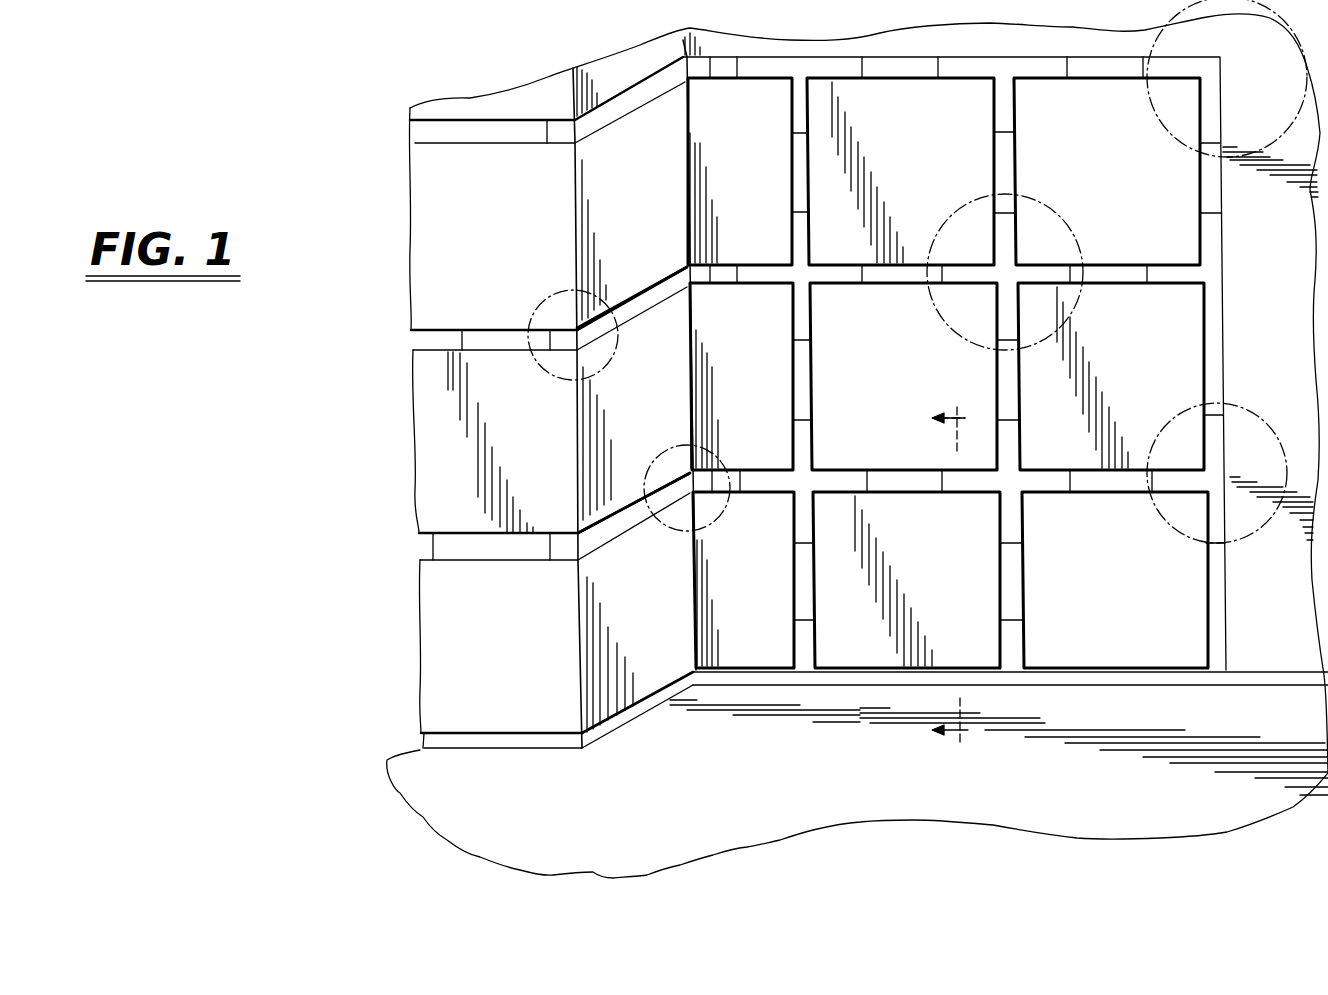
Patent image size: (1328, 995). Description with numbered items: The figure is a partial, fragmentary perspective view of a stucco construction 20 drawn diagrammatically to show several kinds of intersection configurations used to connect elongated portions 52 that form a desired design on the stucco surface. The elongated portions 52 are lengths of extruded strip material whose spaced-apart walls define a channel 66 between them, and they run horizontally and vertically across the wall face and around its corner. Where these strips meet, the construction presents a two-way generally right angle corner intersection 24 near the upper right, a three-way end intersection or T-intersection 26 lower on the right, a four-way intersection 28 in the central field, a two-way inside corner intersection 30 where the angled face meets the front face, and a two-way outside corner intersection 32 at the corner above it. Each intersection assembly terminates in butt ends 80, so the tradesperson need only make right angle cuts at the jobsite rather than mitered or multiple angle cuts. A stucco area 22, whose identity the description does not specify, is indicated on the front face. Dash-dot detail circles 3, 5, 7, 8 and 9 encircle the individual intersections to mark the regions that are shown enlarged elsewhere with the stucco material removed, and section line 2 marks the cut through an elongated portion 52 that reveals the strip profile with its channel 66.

The stucco construction 20 is at (353, 441).
The panel 22 is at (772, 248).
The two-way corner intersection 24 is at (1245, 92).
The T-intersection 26 is at (1243, 510).
The four-way intersection 28 is at (1037, 239).
The inside corner intersection 30 is at (703, 500).
The outside corner intersection 32 is at (593, 351).
The elongated portions 52 is at (490, 351).
The channel 66 is at (481, 131).
The butt ends 80 is at (550, 338).
The section line 2 is at (956, 572).
The detail circle 3 is at (1005, 272).
The detail circle 5 is at (1217, 473).
The detail circle 7 is at (573, 334).
The detail circle 8 is at (643, 488).
The detail circle 9 is at (1227, 78).